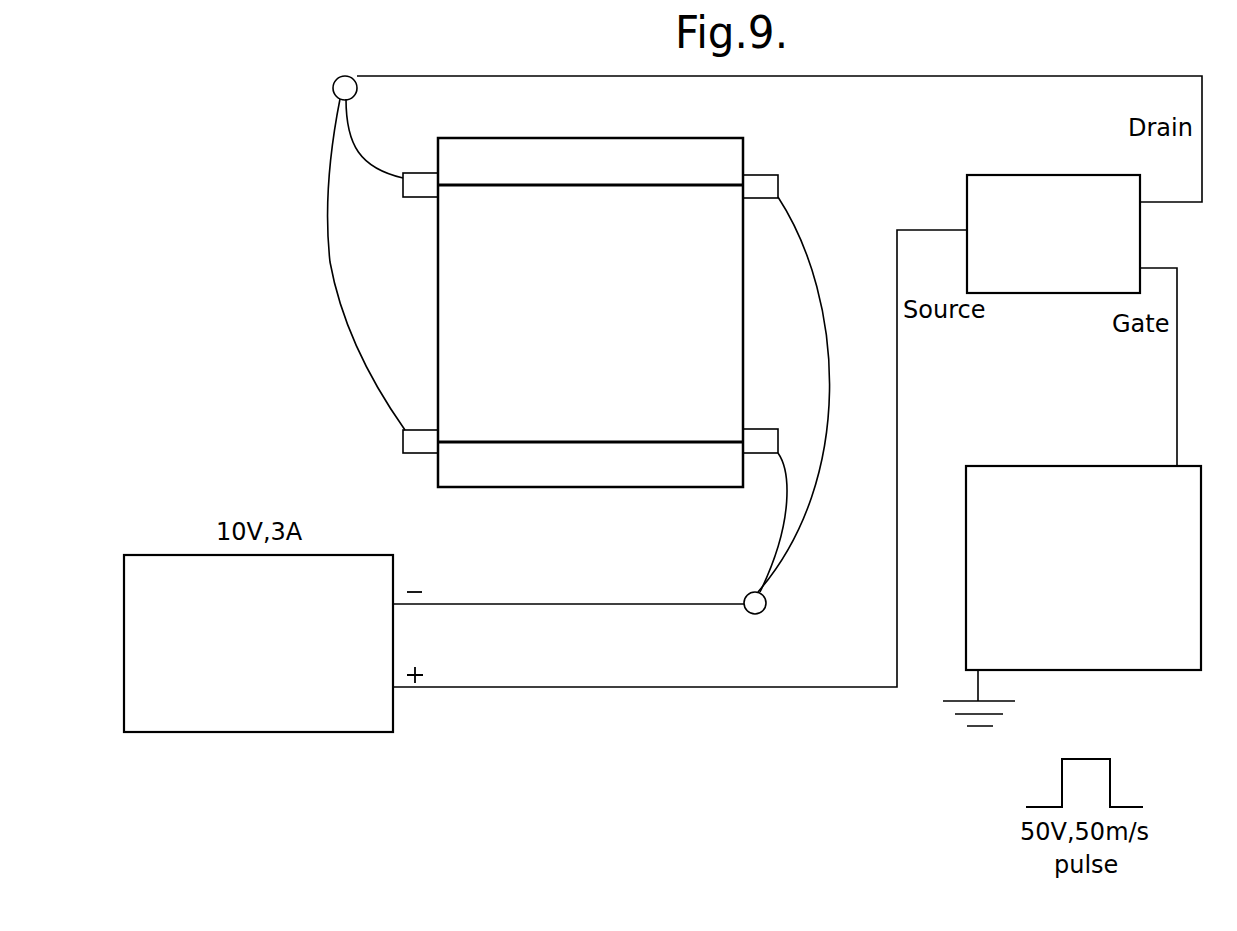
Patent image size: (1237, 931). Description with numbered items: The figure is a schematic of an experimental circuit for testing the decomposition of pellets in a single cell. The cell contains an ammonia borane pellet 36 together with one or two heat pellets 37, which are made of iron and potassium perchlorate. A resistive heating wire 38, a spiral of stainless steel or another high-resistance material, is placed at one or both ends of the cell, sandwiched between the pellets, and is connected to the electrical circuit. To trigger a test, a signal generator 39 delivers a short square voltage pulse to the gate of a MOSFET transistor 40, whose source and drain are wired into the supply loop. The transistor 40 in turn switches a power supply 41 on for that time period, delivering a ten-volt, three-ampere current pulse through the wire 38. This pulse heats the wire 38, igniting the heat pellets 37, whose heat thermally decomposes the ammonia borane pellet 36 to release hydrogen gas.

The ammonia borane pellet 36 is at (571, 320).
The heat pellet 37 is at (590, 185).
The resistive heating wire 38 is at (330, 262).
The signal generator 39 is at (1068, 580).
The MOSFET transistor 40 is at (1036, 248).
The power supply 41 is at (238, 658).